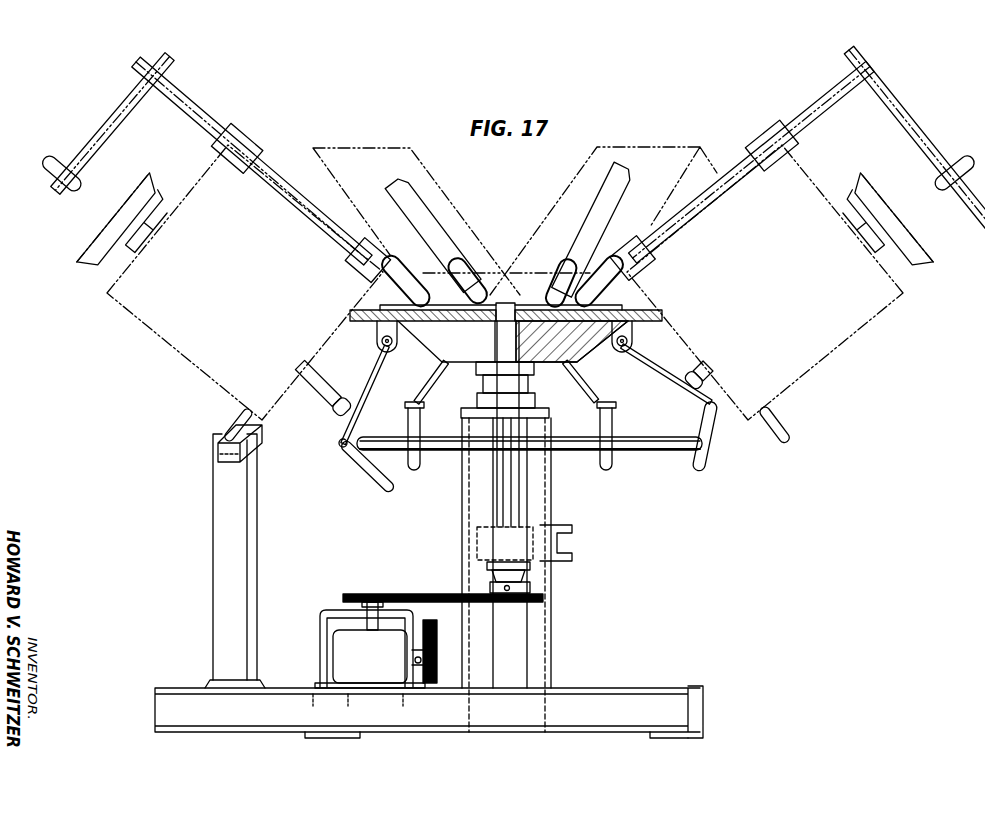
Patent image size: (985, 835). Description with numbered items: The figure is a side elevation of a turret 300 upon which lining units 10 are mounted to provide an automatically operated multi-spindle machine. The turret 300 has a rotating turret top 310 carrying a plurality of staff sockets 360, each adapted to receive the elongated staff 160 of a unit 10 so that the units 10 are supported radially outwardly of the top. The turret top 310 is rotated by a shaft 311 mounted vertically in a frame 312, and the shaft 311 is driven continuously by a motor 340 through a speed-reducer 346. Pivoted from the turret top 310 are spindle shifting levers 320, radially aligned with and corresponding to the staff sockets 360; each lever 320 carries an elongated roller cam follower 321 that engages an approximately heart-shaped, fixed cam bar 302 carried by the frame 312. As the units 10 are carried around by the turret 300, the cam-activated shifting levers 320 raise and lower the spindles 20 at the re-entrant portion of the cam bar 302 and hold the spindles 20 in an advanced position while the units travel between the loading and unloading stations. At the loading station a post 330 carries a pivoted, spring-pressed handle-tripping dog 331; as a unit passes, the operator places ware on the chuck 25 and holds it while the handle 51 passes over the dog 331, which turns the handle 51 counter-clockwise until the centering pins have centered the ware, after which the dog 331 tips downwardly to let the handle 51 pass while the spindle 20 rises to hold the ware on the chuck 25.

The unit 10 is at (107, 293).
The elongated staff 160 is at (275, 168).
The staff socket 360 is at (468, 256).
The chuck 25 is at (157, 197).
The spindle 20 is at (344, 398).
The handle 51 is at (240, 415).
The turret top 310 is at (494, 302).
The spindle shifting lever 320 is at (606, 372).
The roller cam follower 321 is at (360, 434).
The cam bar 302 is at (586, 440).
The shaft 311 is at (520, 505).
The frame 312 is at (552, 526).
The turret 300 is at (555, 626).
The post 330 is at (258, 532).
The handle-tripping dog 331 is at (262, 433).
The motor 340 is at (328, 596).
The speed-reducer 346 is at (345, 640).